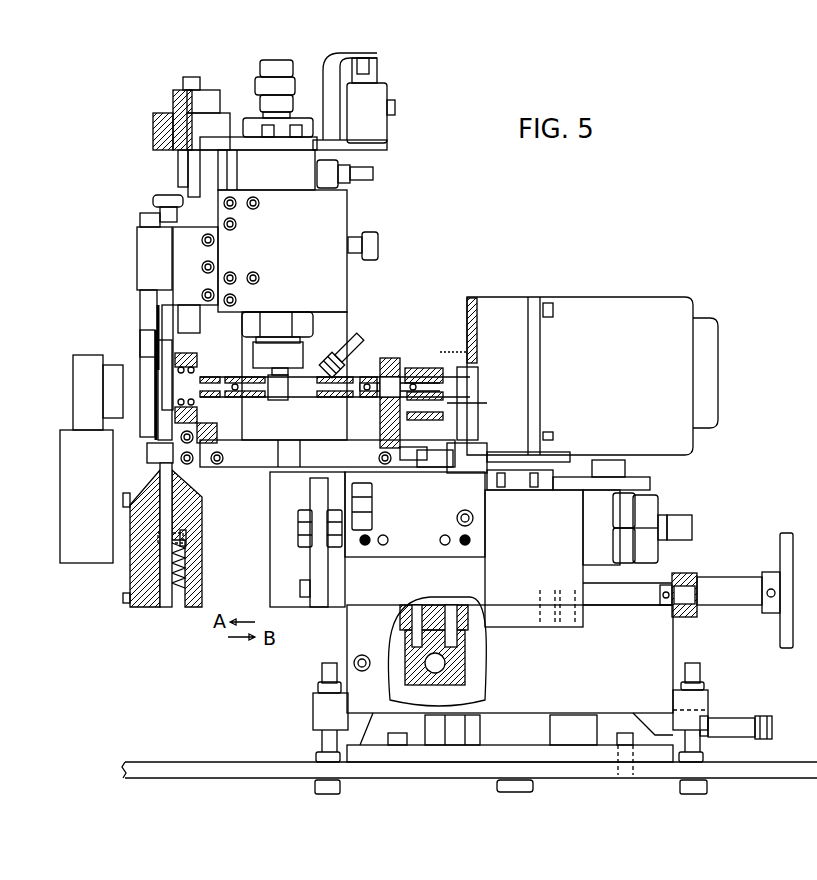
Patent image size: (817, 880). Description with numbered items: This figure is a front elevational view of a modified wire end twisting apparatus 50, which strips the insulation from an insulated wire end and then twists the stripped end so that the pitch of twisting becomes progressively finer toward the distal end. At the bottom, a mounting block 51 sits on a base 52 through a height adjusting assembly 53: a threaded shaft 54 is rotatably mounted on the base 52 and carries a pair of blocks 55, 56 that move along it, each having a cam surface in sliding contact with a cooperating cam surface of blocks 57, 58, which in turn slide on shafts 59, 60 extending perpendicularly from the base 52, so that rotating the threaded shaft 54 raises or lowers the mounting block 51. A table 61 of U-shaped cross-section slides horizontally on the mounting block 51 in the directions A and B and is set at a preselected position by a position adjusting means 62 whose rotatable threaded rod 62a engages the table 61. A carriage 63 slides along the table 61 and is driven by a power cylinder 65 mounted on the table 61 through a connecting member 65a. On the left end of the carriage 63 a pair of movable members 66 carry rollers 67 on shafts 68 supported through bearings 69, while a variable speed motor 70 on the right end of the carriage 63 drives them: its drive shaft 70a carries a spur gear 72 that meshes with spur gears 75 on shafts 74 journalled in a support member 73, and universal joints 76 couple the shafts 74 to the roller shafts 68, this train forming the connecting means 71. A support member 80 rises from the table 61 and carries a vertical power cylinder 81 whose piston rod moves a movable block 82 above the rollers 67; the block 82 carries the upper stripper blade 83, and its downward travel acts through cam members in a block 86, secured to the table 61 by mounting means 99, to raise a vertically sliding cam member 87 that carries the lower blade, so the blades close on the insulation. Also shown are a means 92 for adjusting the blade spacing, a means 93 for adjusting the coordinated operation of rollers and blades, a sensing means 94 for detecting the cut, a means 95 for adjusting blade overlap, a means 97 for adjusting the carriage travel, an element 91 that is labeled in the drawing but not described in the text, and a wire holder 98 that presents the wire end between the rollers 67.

The wire end twisting apparatus 50 is at (470, 265).
The mounting block 51 is at (347, 697).
The base 52 is at (278, 770).
The height adjusting assembly 53 is at (712, 700).
The threaded shaft 54 is at (745, 720).
The block 55 is at (415, 745).
The block 56 is at (607, 730).
The block 57 is at (313, 697).
The block 58 is at (712, 713).
The shaft 59 is at (322, 668).
The shaft 60 is at (697, 672).
The table 61 is at (352, 588).
The position adjusting means 62 is at (738, 577).
The threaded rod 62a is at (645, 580).
The carriage 63 is at (325, 450).
The power cylinder 65 is at (640, 512).
The connecting member 65a is at (372, 520).
The movable member 66 is at (215, 425).
The roller 67 is at (172, 345).
The shaft 68 is at (205, 380).
The bearing 69 is at (148, 360).
The variable speed motor 70 is at (605, 305).
The drive shaft 70a is at (442, 370).
The connecting means 71 is at (286, 400).
The spur gear 72 is at (432, 420).
The support member 73 is at (390, 432).
The shaft 74 is at (380, 386).
The spur gear 75 is at (420, 368).
The universal joint 76 is at (328, 397).
The support member 80 is at (330, 335).
The power cylinder 81 is at (300, 325).
The movable block 82 is at (137, 265).
The upper stripper blade 83 is at (157, 322).
The block 86 is at (145, 607).
The cam member 87 is at (166, 607).
The block 91 is at (200, 327).
The adjusting means 92 is at (165, 196).
The adjusting means 93 is at (178, 92).
The sensing means 94 is at (385, 113).
The adjusting means 95 is at (378, 245).
The adjusting means 97 is at (470, 447).
The wire holder 98 is at (73, 380).
The mounting means 99 is at (478, 504).